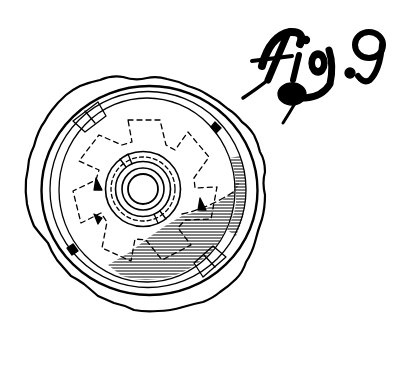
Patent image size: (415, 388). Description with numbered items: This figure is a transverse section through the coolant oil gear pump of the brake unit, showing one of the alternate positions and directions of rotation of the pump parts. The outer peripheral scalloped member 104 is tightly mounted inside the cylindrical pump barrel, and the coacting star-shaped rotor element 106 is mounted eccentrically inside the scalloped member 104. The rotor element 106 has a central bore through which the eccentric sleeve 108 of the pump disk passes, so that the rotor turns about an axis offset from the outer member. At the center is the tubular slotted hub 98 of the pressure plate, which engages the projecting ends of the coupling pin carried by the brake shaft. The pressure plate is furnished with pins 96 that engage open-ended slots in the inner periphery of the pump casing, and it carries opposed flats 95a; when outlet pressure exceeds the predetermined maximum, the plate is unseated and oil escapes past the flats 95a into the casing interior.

The opposed flats 95a is at (97, 115).
The pins 96 is at (221, 126).
The central tubular slotted hub 98 is at (137, 224).
The outer peripheral scalloped member 104 is at (248, 194).
The star-shaped rotor element 106 is at (247, 175).
The eccentric sleeve 108 is at (148, 172).